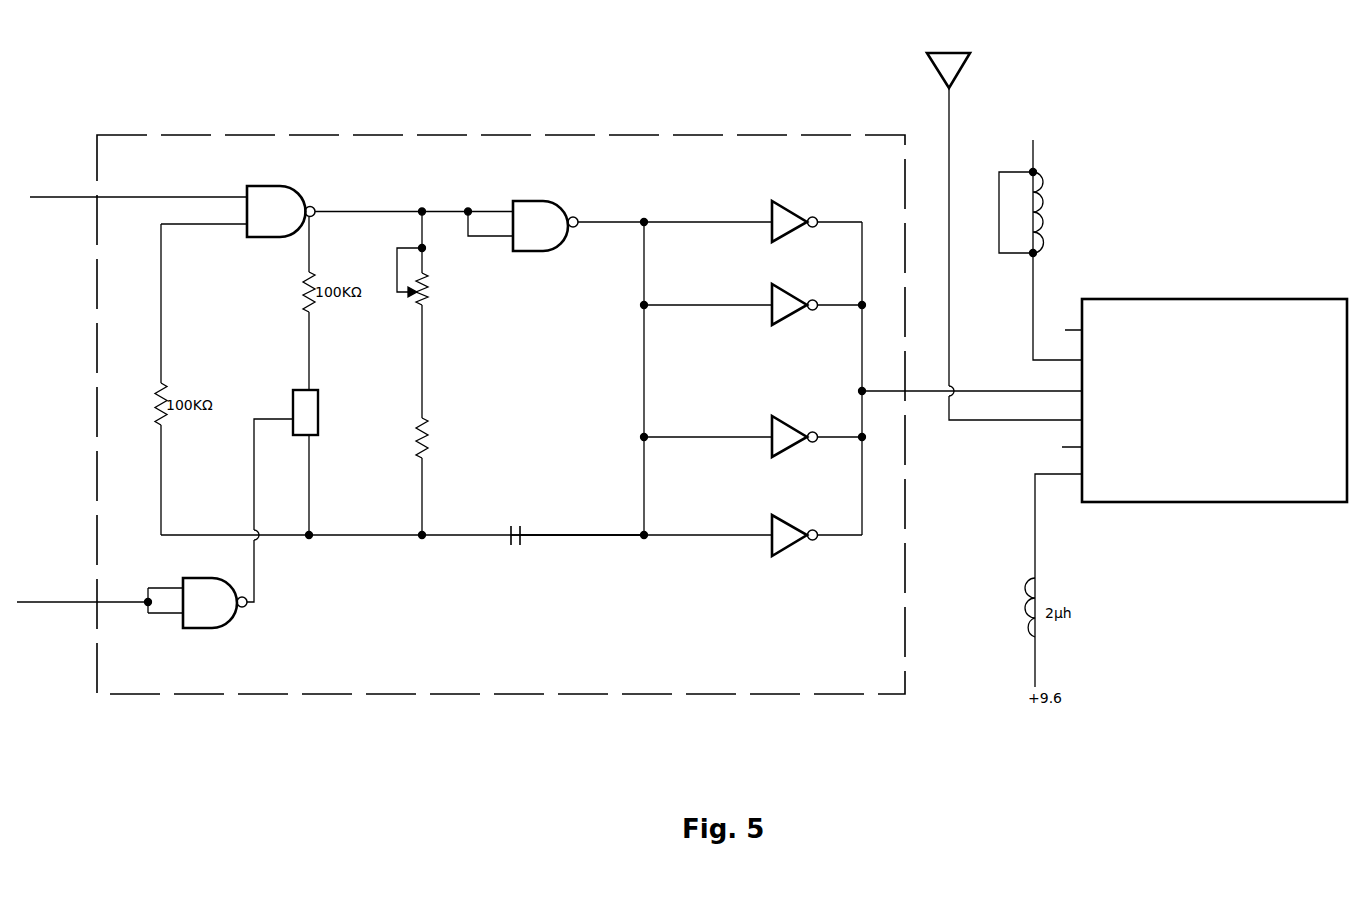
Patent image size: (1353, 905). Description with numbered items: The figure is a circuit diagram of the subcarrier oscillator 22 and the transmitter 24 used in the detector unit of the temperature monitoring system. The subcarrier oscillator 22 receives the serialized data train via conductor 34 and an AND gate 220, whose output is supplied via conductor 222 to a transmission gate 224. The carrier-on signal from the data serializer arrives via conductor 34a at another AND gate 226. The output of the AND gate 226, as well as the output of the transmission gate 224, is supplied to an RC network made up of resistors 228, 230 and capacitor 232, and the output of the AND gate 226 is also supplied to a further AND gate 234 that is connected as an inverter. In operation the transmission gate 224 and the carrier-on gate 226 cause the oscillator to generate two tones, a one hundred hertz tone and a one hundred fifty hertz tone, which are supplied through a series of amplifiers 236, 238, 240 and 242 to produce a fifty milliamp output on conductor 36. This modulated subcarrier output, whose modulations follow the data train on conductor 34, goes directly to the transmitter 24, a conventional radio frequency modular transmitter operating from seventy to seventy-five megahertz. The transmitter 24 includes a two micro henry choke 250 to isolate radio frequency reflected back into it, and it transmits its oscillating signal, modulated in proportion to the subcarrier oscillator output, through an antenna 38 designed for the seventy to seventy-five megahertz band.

The subcarrier oscillator 22 is at (808, 695).
The transmitter 24 is at (1162, 503).
The conductor 34 is at (25, 604).
The conductor 34a is at (50, 200).
The conductor 36 is at (920, 392).
The antenna 38 is at (950, 148).
The AND gate 220 is at (216, 629).
The conductor 222 is at (254, 566).
The transmission gate 224 is at (320, 416).
The AND gate 226 is at (272, 185).
The resistor 228 is at (428, 308).
The resistor 230 is at (425, 422).
The capacitor 232 is at (554, 512).
The AND gate 234 is at (536, 200).
The amplifier 236 is at (790, 523).
The amplifier 238 is at (790, 425).
The amplifier 240 is at (790, 293).
The amplifier 242 is at (790, 210).
The choke 250 is at (1078, 224).